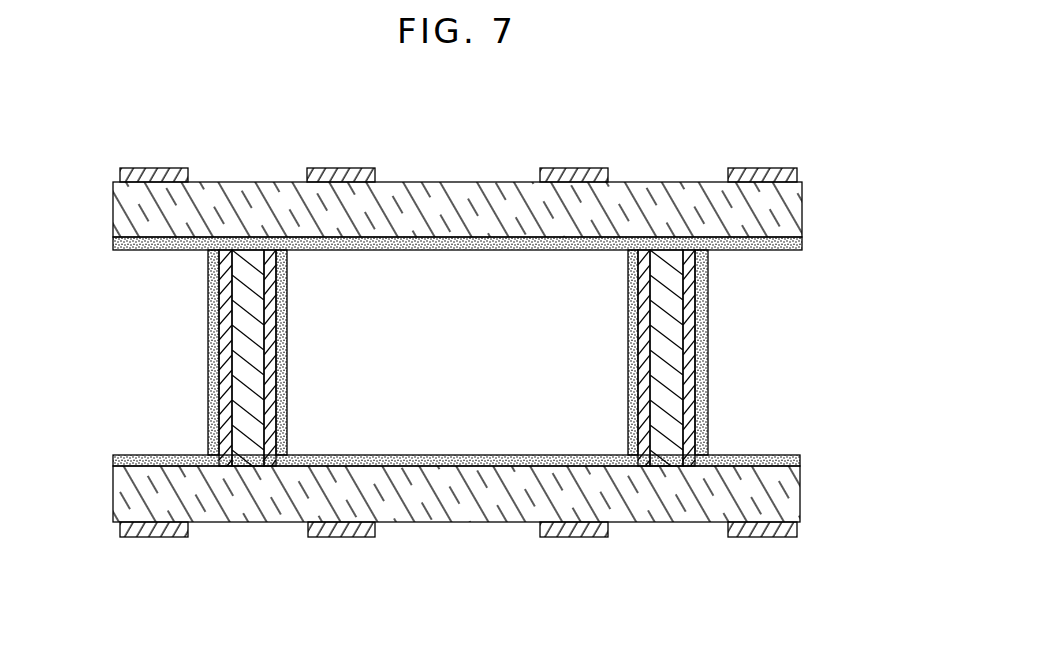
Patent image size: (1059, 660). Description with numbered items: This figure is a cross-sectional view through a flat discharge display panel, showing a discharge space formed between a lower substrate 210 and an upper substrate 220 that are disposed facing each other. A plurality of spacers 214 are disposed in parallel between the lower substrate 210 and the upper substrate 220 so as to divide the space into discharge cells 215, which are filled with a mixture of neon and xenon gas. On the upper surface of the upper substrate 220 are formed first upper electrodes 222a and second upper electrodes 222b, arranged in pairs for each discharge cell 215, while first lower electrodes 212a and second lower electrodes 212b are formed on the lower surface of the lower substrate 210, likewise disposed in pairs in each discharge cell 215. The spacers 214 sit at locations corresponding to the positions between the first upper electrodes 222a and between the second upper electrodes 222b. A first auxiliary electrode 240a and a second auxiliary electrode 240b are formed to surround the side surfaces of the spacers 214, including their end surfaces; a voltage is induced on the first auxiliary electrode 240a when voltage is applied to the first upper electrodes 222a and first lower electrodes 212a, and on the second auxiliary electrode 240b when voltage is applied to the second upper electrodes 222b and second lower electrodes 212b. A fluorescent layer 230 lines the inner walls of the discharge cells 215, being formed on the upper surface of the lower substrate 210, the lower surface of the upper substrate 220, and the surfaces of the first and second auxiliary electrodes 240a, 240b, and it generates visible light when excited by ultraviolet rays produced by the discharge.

The lower substrate 210 is at (792, 490).
The first lower electrodes 212a is at (155, 537).
The second lower electrodes 212b is at (572, 537).
The spacers 214 is at (240, 355).
The discharge cells 215 is at (482, 358).
The upper substrate 220 is at (792, 213).
The first upper electrodes 222a is at (155, 168).
The second upper electrodes 222b is at (575, 168).
The fluorescent layer 230 is at (802, 241).
The first auxiliary electrode 240a is at (227, 467).
The second auxiliary electrode 240b is at (647, 467).